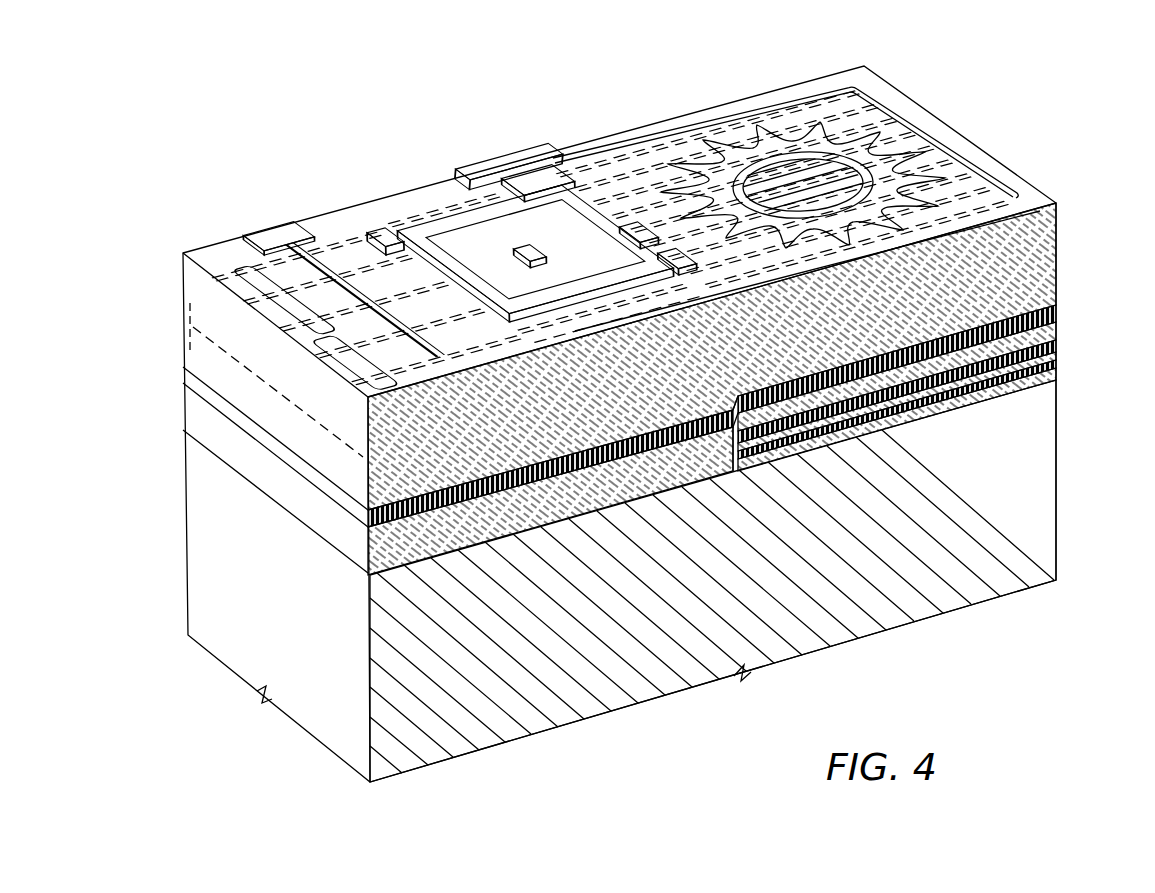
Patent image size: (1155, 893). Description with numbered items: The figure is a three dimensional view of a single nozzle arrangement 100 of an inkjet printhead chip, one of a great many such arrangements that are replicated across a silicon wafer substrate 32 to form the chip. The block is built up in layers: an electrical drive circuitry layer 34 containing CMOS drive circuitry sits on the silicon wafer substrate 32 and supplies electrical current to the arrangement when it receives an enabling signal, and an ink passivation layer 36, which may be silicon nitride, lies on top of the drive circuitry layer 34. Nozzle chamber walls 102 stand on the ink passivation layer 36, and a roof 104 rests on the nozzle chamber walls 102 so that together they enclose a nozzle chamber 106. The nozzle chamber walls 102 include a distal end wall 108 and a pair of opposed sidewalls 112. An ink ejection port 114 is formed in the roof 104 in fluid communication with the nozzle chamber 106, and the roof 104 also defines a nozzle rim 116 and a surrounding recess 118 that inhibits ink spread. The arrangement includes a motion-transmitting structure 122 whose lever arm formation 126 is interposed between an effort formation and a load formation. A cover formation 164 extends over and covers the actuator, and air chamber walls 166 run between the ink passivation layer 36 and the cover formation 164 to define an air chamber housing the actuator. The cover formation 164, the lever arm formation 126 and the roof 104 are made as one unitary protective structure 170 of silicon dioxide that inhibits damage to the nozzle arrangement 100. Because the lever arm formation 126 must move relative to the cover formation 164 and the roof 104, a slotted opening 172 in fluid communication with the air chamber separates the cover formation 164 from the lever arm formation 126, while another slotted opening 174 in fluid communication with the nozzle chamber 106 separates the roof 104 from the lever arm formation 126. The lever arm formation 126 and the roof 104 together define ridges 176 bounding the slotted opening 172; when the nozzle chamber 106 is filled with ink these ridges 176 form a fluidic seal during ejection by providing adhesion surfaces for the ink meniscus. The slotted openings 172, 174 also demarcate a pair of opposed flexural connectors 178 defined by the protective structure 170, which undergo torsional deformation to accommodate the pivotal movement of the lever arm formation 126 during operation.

The nozzle arrangement 100 is at (1078, 108).
The nozzle chamber walls 102 is at (1060, 254).
The roof 104 is at (600, 174).
The nozzle chamber 106 is at (810, 165).
The distal end wall 108 is at (1042, 186).
The sidewalls 112 is at (698, 112).
The ink ejection port 114 is at (787, 148).
The nozzle rim 116 is at (873, 151).
The recess 118 is at (925, 167).
The motion-transmitting structure 122 is at (455, 210).
The lever arm formation 126 is at (528, 258).
The cover formation 164 is at (340, 242).
The air chamber walls 166 is at (258, 236).
The protective structure 170 is at (557, 208).
The slotted opening 172 is at (492, 174).
The slotted opening 174 is at (383, 246).
The ridges 176 is at (647, 253).
The flexural connectors 178 is at (384, 198).
The silicon wafer substrate 32 is at (1060, 460).
The electrical drive circuitry layer 34 is at (1060, 354).
The ink passivation layer 36 is at (1060, 312).